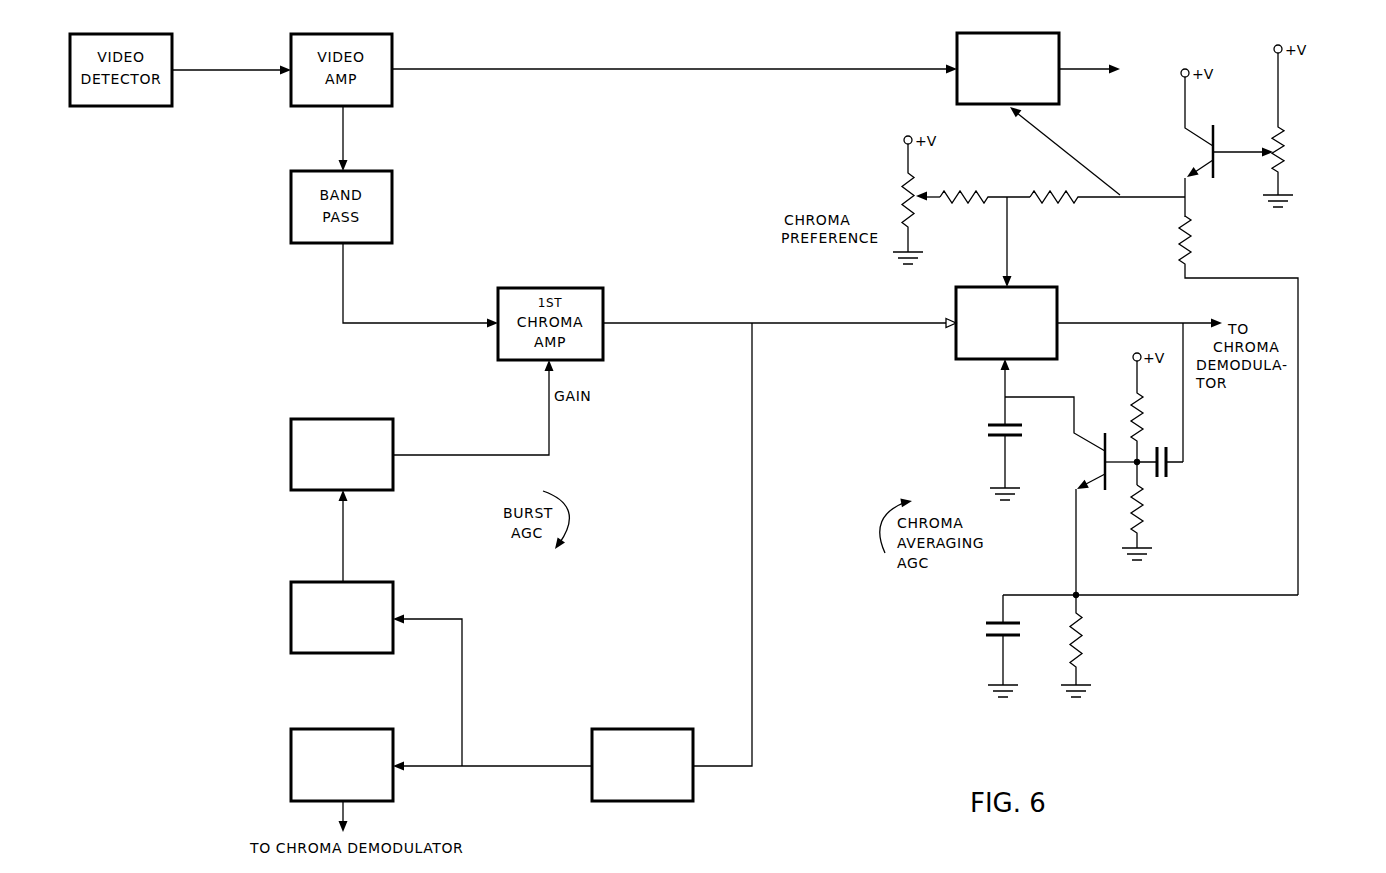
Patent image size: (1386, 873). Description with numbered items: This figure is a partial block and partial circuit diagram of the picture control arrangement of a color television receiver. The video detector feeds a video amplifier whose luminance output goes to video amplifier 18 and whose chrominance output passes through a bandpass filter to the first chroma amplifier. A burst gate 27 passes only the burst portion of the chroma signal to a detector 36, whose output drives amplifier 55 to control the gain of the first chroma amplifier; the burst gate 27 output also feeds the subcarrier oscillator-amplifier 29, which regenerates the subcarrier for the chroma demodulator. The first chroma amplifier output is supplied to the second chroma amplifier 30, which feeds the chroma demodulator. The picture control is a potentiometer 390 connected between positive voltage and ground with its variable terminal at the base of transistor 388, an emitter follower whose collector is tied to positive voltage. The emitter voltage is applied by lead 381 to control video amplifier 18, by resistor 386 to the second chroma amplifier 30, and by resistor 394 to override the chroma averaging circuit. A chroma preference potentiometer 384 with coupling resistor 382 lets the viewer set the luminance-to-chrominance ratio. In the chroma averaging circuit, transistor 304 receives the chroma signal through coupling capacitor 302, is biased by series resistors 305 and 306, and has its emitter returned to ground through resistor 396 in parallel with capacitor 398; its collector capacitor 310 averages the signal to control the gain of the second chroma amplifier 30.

The video amplifier 18 is at (1034, 20).
The burst gate 27 is at (668, 716).
The subcarrier oscillator-amplifier 29 is at (368, 716).
The second chroma amplifier 30 is at (1033, 275).
The detector 36 is at (366, 569).
The amplifier 55 is at (366, 406).
The coupling capacitor 302 is at (1170, 476).
The transistor 304 is at (1088, 464).
The resistor 305 is at (1130, 405).
The resistor 306 is at (1148, 518).
The capacitor 310 is at (991, 428).
The lead 381 is at (1074, 144).
The coupling resistor 382 is at (948, 193).
The potentiometer 384 is at (906, 190).
The resistor 386 is at (1051, 211).
The transistor 388 is at (1202, 177).
The potentiometer 390 is at (1290, 126).
The resistor 394 is at (1196, 230).
The resistor 396 is at (1088, 626).
The capacitor 398 is at (985, 626).